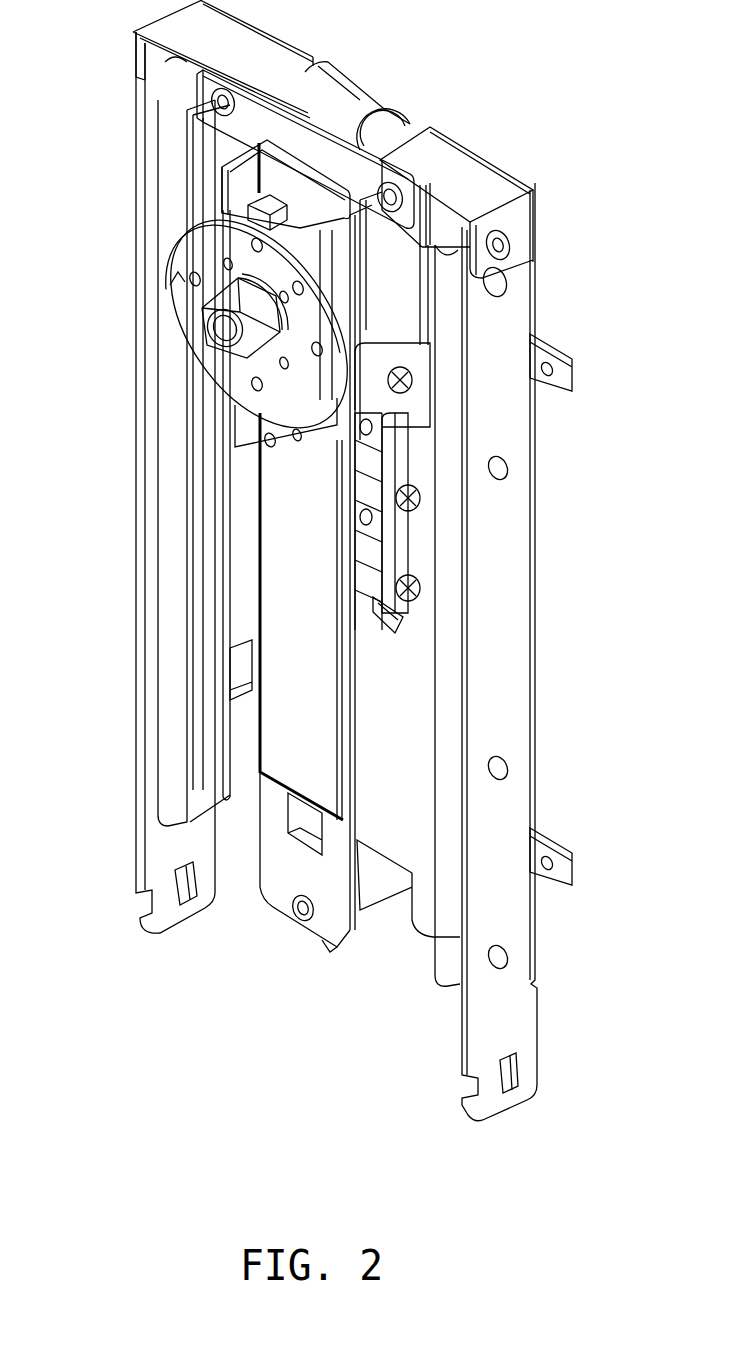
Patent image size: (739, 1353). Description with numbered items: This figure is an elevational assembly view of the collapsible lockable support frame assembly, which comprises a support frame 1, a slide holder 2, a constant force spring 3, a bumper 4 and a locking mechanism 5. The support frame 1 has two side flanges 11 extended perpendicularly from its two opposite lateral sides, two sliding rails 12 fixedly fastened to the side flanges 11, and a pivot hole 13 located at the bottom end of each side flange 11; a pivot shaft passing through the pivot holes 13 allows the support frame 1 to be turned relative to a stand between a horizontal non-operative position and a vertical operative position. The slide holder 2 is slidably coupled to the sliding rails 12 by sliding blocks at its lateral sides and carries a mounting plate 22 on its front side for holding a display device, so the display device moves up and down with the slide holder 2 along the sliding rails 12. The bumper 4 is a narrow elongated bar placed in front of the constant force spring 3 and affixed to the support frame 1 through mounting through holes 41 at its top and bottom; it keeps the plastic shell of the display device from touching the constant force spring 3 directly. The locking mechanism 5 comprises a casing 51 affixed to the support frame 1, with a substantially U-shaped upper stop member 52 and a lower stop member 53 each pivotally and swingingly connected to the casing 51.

The support frame 1 is at (453, 167).
The slide holder 2 is at (240, 202).
The constant force spring 3 is at (347, 93).
The bumper 4 is at (280, 572).
The locking mechanism 5 is at (427, 560).
The side flange 11 is at (140, 420).
The sliding rail 12 is at (170, 150).
The pivot hole 13 is at (185, 883).
The mounting plate 22 is at (190, 302).
The mounting through hole 41 is at (305, 915).
The casing 51 is at (395, 442).
The upper stop member 52 is at (405, 512).
The lower stop member 53 is at (402, 617).